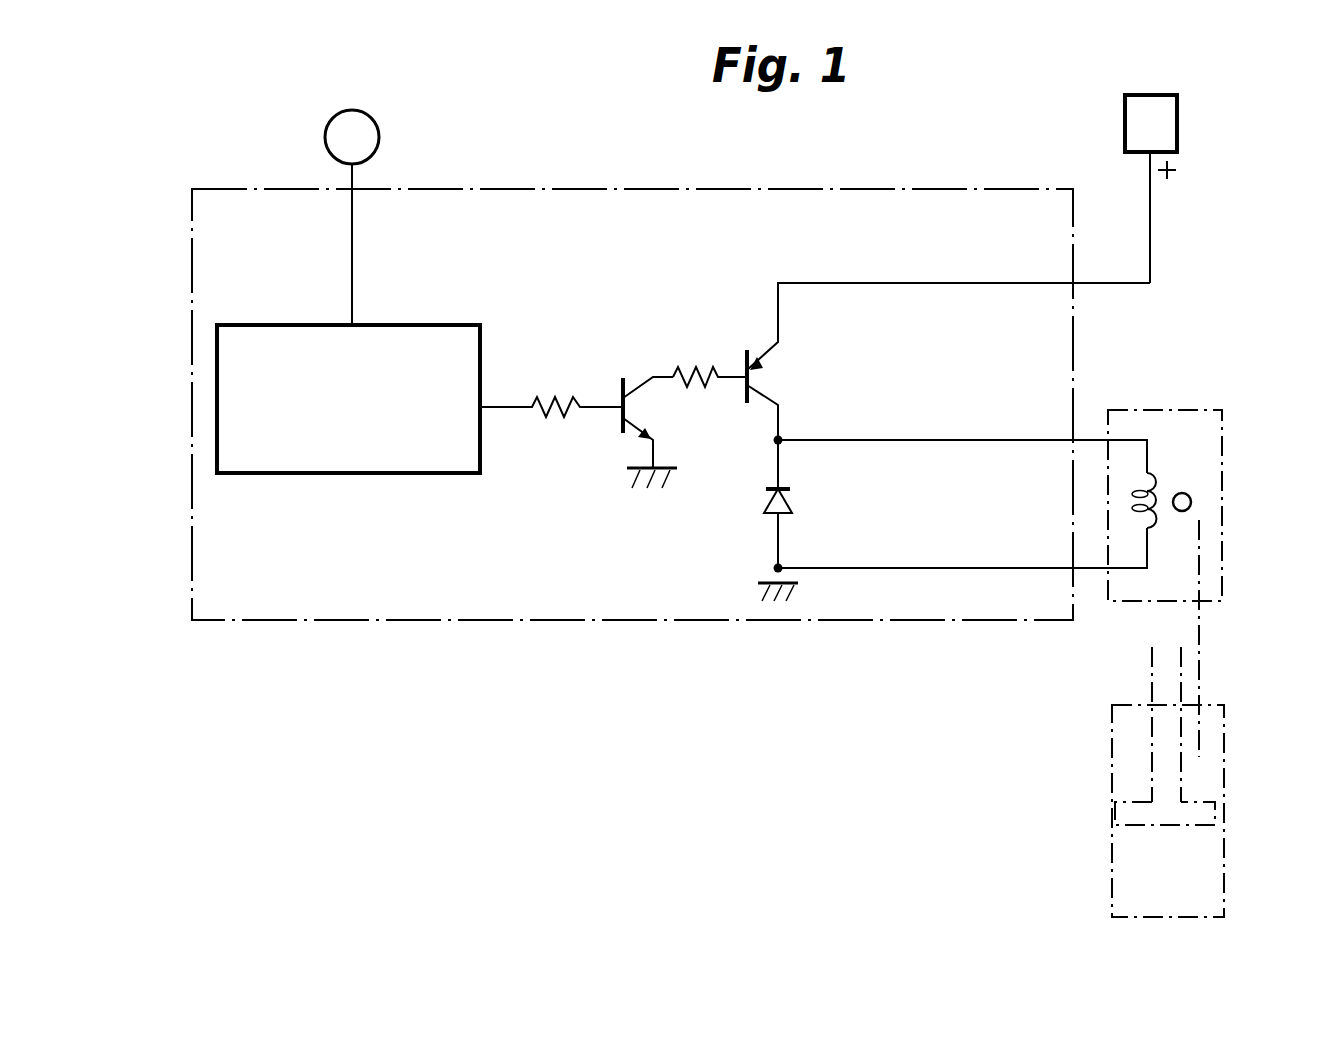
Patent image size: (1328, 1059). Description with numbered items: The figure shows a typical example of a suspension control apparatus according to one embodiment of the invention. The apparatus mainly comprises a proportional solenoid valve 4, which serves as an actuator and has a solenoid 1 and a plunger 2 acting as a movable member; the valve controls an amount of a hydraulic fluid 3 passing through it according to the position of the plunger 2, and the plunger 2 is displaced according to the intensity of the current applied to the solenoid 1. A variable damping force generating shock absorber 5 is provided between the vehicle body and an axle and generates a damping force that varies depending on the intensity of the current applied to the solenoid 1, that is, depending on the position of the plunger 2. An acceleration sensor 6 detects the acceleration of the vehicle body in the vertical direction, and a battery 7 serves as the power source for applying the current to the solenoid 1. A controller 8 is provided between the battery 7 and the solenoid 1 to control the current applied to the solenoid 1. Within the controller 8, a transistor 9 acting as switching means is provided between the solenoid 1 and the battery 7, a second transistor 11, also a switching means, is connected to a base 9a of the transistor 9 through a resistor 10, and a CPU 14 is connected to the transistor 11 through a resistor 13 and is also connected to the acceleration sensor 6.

The solenoid 1 is at (1148, 470).
The plunger 2 is at (1191, 500).
The hydraulic fluid 3 is at (1199, 657).
The proportional solenoid valve 4 is at (1224, 543).
The variable damping force generating shock absorber 5 is at (1225, 795).
The acceleration sensor 6 is at (381, 135).
The battery 7 is at (1178, 130).
The controller 8 is at (597, 622).
The transistor 9 is at (933, 360).
The base of transistor 9a is at (748, 352).
The resistor 10 is at (690, 365).
The transistor 11 is at (612, 384).
The resistor 13 is at (545, 420).
The CPU 14 is at (371, 476).